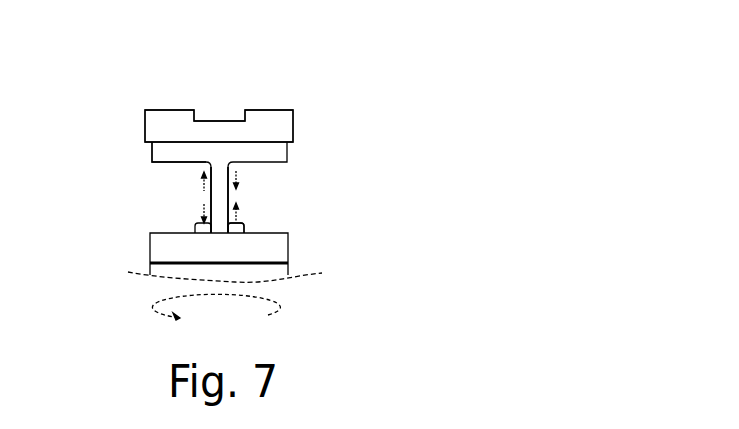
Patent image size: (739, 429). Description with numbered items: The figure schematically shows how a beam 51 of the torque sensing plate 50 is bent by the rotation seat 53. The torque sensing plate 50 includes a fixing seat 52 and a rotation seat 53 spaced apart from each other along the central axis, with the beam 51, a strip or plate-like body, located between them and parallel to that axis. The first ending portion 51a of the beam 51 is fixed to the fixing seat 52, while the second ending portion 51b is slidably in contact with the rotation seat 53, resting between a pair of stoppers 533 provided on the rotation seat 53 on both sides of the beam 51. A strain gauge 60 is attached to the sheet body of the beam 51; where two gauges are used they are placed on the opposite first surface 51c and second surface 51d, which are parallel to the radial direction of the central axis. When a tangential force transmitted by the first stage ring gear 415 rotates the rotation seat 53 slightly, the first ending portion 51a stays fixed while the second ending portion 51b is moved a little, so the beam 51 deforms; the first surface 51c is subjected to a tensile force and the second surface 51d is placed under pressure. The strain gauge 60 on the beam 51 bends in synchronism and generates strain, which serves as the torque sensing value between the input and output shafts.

The torque sensing plate 50 is at (308, 128).
The fixing seat 52 is at (160, 126).
The beam 51 is at (210, 192).
The first ending portion 51a is at (280, 165).
The strain gauge 60 is at (230, 190).
The first surface 51c is at (211, 198).
The second surface 51d is at (233, 198).
The stopper 533 is at (198, 228).
The second ending portion 51b is at (246, 228).
The rotation seat 53 is at (160, 247).
The first stage ring gear 415 is at (284, 277).